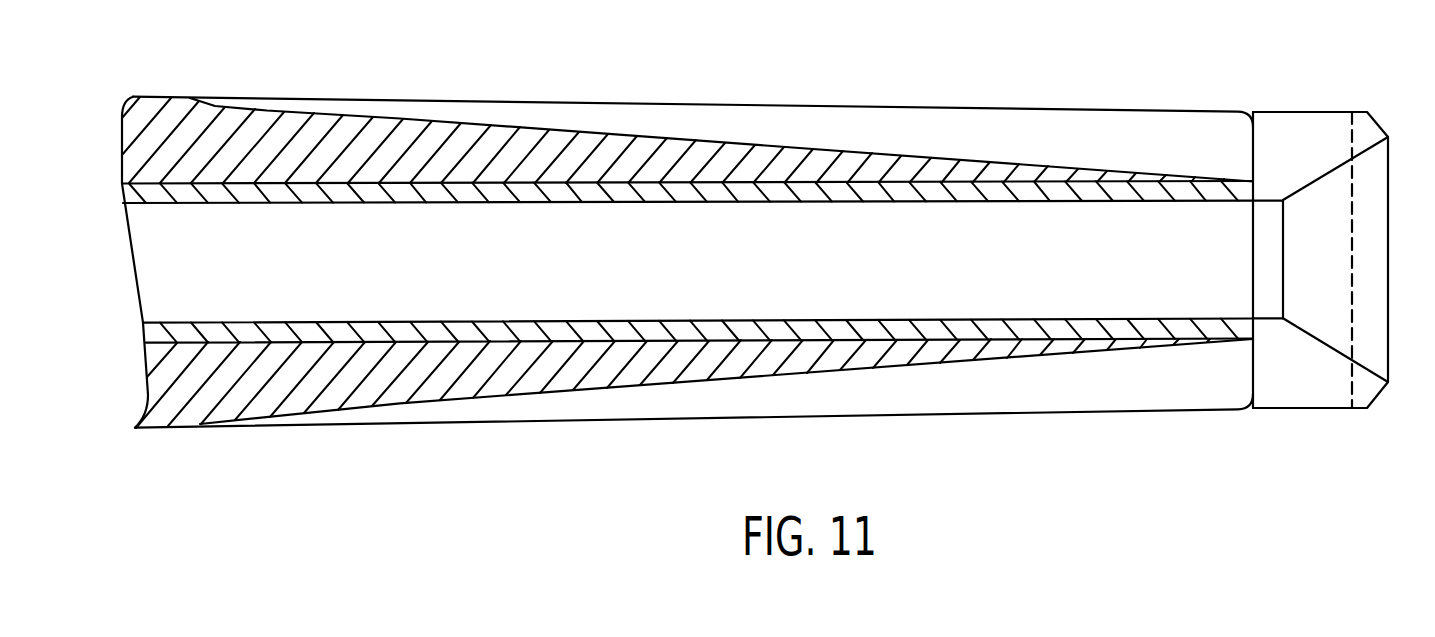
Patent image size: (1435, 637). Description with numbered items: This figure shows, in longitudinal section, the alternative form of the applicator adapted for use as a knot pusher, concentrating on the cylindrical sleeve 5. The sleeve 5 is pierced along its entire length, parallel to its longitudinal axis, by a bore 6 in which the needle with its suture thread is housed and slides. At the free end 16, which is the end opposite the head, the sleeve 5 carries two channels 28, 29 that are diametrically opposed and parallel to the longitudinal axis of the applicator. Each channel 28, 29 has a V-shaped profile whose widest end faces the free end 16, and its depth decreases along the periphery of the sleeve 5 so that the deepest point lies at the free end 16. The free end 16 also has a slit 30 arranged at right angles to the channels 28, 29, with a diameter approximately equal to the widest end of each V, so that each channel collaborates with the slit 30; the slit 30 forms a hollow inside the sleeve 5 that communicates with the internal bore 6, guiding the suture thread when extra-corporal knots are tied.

The sleeve 5 is at (238, 127).
The bore 6 is at (1027, 218).
The channel 28 is at (927, 118).
The channel 29 is at (883, 395).
The free end 16 is at (1365, 135).
The slit 30 is at (1362, 155).